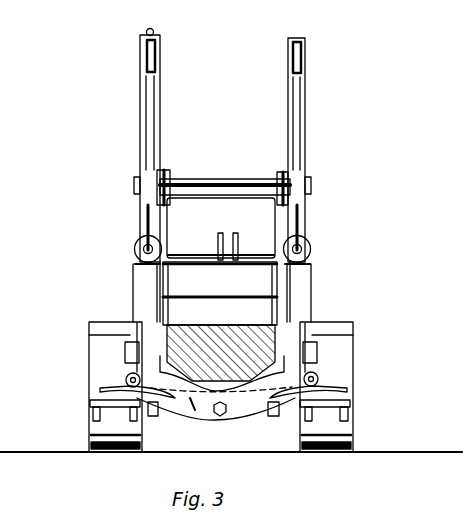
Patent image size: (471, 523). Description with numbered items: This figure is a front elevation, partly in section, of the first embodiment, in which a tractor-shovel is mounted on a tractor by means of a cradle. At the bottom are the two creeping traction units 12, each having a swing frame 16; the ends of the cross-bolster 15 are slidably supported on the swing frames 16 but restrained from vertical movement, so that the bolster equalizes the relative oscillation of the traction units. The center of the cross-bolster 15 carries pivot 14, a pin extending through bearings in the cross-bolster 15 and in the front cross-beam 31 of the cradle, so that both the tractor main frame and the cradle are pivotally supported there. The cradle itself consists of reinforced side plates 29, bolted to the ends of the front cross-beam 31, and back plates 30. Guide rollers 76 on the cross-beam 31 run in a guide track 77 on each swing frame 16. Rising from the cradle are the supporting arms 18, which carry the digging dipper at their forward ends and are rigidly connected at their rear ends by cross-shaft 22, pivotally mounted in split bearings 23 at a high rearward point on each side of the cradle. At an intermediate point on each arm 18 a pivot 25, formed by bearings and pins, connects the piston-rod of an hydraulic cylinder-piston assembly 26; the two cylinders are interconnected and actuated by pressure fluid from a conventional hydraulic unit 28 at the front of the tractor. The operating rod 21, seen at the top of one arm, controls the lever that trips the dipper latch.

The creeping traction unit 12 is at (90, 438).
The pivot 14 is at (216, 386).
The cross-bolster 15 is at (125, 387).
The swing frame 16 is at (92, 402).
The supporting arm 18 is at (148, 100).
The operating rod 21 is at (146, 31).
The cross-shaft 22 is at (225, 169).
The split bearing 23 is at (165, 175).
The pivot 25 is at (134, 186).
The hydraulic cylinder-piston assembly 26 is at (222, 292).
The hydraulic unit 28 is at (190, 284).
The side plate 29 is at (160, 228).
The back plate 30 is at (192, 222).
The front cross-beam 31 is at (192, 402).
The guide roller 76 is at (128, 376).
The guide track 77 is at (100, 333).